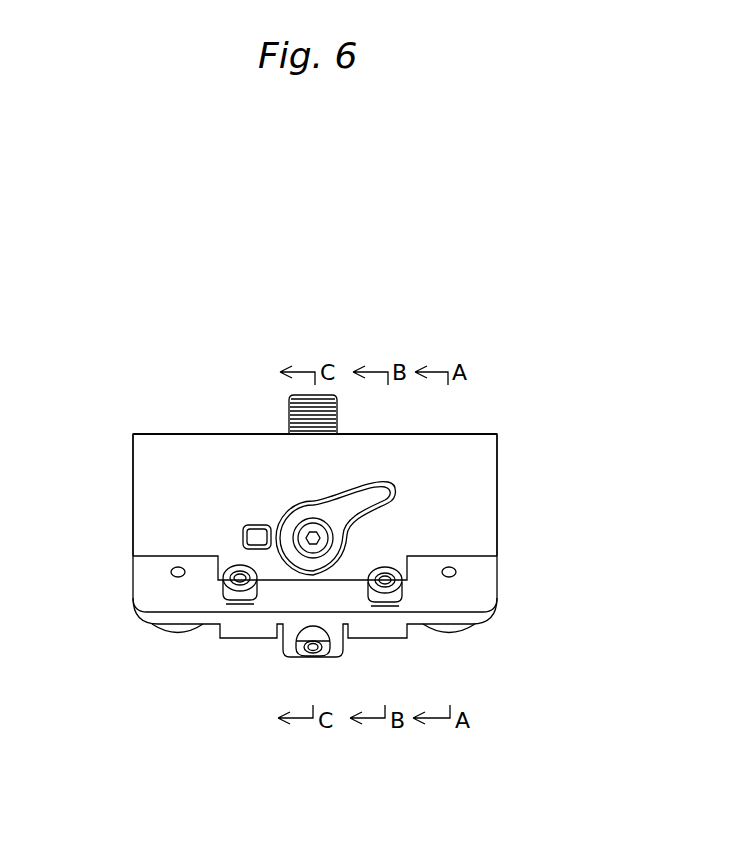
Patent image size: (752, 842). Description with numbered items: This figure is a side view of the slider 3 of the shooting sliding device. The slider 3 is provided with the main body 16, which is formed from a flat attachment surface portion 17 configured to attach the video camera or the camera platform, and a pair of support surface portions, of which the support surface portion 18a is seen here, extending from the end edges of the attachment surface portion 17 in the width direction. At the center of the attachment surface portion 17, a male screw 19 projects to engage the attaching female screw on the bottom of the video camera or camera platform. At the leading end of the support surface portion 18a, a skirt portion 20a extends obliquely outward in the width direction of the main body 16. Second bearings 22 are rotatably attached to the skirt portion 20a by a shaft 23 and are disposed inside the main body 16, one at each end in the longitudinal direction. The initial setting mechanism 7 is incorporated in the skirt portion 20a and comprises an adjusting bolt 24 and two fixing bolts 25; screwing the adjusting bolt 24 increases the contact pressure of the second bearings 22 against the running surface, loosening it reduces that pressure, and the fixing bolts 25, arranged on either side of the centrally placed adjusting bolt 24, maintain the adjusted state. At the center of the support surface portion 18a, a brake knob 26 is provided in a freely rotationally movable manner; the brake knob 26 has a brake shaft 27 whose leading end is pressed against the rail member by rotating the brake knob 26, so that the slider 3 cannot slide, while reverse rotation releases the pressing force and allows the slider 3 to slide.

The slider 3 is at (486, 413).
The initial setting mechanism 7 is at (293, 671).
The main body 16 is at (513, 460).
The attachment surface portion 17 is at (213, 434).
The support surface portion 18a is at (148, 510).
The male screw 19 is at (289, 420).
The skirt portion 20a is at (282, 596).
The second bearing 22 is at (178, 632).
The shaft 23 is at (171, 573).
The adjusting bolt 24 is at (310, 660).
The fixing bolt 25 is at (240, 600).
The brake knob 26 is at (363, 497).
The brake shaft 27 is at (305, 522).